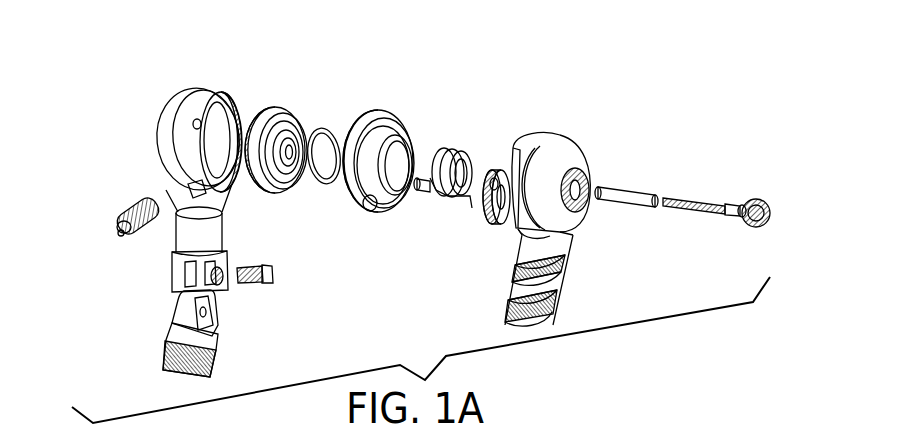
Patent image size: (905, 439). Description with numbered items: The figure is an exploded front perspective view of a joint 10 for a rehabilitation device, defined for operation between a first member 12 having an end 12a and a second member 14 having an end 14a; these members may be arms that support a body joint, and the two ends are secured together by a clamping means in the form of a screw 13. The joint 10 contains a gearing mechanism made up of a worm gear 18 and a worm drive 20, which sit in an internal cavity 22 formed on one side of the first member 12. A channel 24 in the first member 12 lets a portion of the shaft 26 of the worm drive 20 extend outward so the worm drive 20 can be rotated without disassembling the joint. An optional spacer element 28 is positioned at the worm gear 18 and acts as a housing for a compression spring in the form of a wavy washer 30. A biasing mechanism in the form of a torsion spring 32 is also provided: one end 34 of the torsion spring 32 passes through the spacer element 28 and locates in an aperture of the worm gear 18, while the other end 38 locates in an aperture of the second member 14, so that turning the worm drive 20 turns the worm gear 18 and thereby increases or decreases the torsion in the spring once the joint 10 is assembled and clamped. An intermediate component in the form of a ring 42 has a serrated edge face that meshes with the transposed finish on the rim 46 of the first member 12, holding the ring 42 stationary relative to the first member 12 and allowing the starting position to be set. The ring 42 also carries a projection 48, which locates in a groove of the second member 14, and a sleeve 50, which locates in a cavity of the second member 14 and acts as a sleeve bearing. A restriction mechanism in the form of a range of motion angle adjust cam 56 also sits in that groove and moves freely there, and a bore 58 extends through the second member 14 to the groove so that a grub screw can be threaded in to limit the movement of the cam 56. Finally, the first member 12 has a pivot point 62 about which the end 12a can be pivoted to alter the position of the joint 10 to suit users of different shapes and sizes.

The joint 10 is at (172, 72).
The first member 12 is at (137, 143).
The end of first member 12a is at (196, 122).
The screw 13 is at (683, 190).
The second member 14 is at (583, 260).
The end of second member 14a is at (515, 230).
The worm gear 18 is at (270, 105).
The worm drive 20 is at (118, 236).
The internal cavity 22 is at (212, 125).
The channel 24 is at (193, 190).
The shaft 26 is at (125, 222).
The spacer element 28 is at (276, 182).
The wavy washer 30 is at (327, 128).
The torsion spring 32 is at (458, 150).
The end of torsion spring 34 is at (421, 193).
The other end of torsion spring 38 is at (482, 204).
The ring 42 is at (385, 110).
The rim 46 is at (232, 100).
The projection 48 is at (373, 218).
The sleeve 50 is at (386, 143).
The range of motion angle adjust cam 56 is at (498, 178).
The bore 58 is at (545, 140).
The pivot point 62 is at (225, 303).